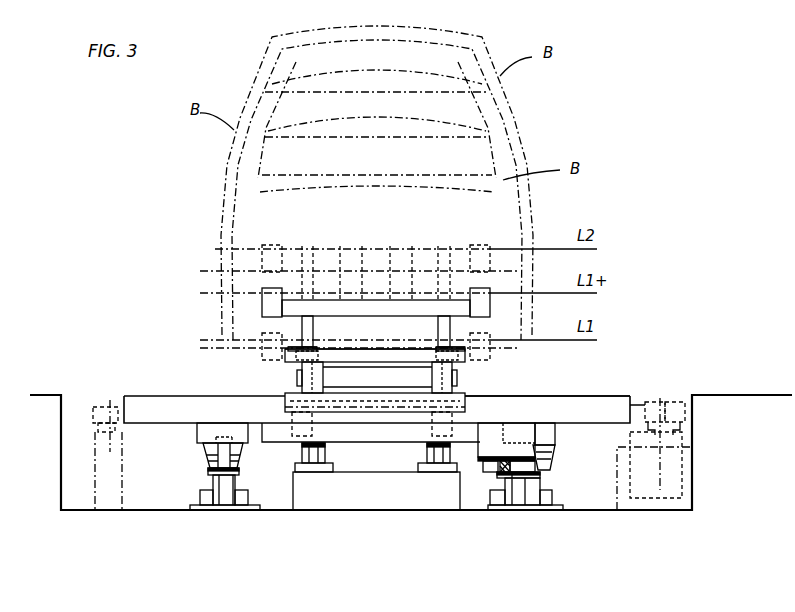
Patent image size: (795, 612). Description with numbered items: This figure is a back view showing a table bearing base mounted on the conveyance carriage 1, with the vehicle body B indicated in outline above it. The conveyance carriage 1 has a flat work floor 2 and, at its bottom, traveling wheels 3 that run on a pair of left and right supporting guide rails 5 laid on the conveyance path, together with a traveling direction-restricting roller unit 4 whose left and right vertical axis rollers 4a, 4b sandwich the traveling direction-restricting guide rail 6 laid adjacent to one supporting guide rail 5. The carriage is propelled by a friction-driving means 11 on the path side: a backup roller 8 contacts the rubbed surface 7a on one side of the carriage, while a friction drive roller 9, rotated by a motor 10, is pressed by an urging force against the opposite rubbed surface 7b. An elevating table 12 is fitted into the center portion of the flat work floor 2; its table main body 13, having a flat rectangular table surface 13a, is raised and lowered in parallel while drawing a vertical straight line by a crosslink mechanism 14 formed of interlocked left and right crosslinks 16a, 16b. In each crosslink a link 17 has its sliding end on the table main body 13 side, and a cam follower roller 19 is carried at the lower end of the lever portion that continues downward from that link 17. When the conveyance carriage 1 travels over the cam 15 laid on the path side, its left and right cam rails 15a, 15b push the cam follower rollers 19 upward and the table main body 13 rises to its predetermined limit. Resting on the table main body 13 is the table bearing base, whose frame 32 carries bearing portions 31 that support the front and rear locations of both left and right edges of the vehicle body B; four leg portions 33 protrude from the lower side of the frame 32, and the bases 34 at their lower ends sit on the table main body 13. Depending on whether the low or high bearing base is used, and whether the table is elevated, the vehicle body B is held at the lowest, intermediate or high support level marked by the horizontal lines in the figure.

The conveyance carriage 1 is at (171, 391).
The flat work floor 2 is at (594, 395).
The traveling wheels 3 is at (380, 446).
The traveling direction-restricting roller unit 4 is at (484, 480).
The vertical axis roller 4a is at (485, 465).
The vertical axis roller 4b is at (512, 478).
The supporting guide rails 5 is at (381, 489).
The traveling direction-restricting guide rail 6 is at (502, 474).
The rubbed surface 7a is at (124, 411).
The rubbed surface 7b is at (632, 410).
The backup roller 8 is at (97, 417).
The friction drive roller 9 is at (668, 410).
The motor 10 is at (675, 465).
The friction-driving means 11 is at (663, 390).
The elevating table 12 is at (376, 281).
The table main body 13 is at (375, 395).
The table surface 13a is at (385, 349).
The crosslink mechanism 14 is at (466, 376).
The cam 15 is at (292, 449).
The cam rail 15a is at (331, 448).
The cam rail 15b is at (452, 450).
The crosslink 16a is at (297, 382).
The crosslink 16b is at (465, 389).
The link 17 is at (377, 377).
The cam follower roller 19 is at (356, 445).
The bearing portions 31 is at (377, 290).
The frame 32 is at (362, 322).
The leg portion 33 is at (368, 338).
The bases 34 is at (354, 328).